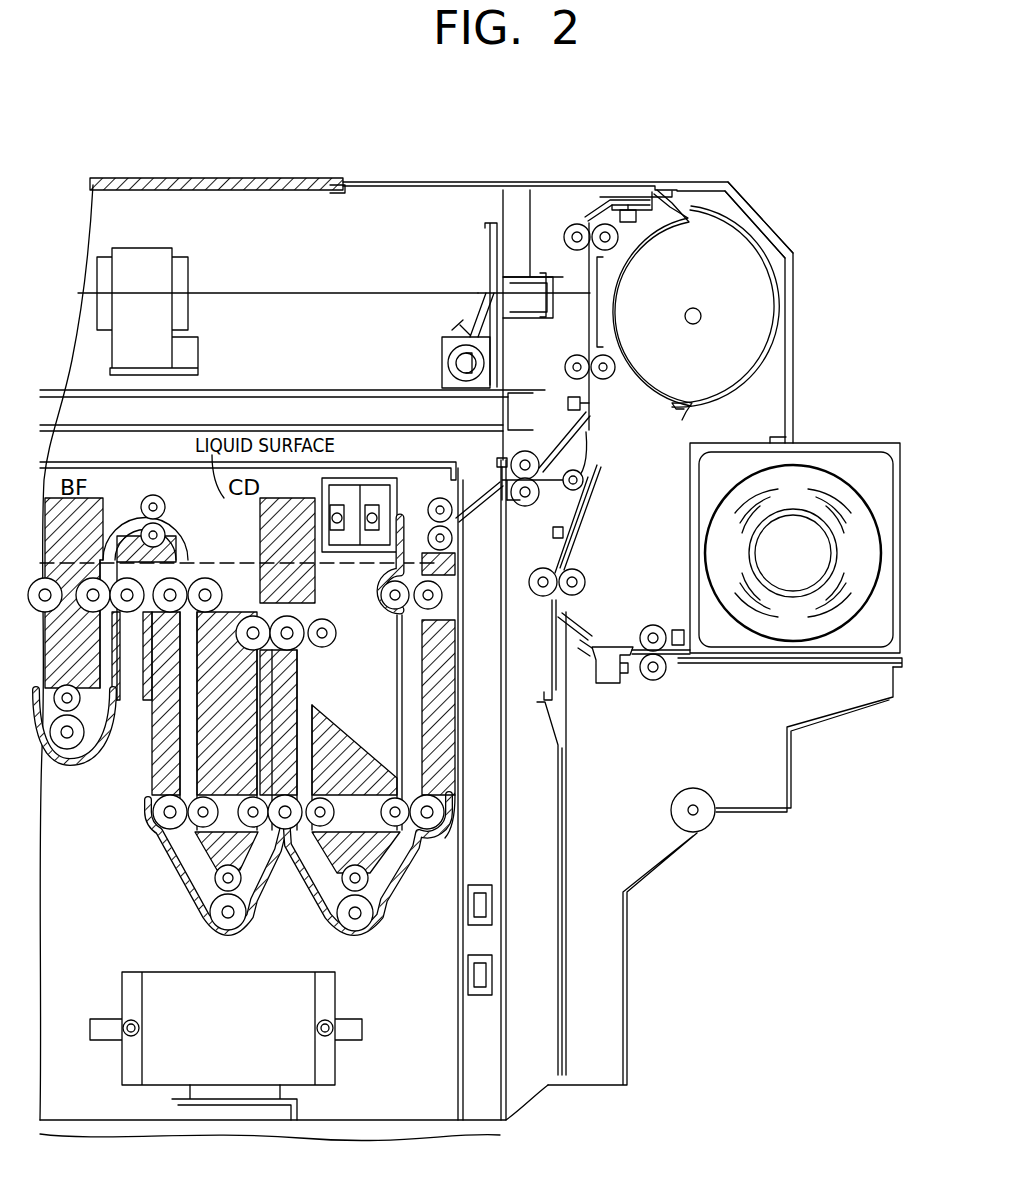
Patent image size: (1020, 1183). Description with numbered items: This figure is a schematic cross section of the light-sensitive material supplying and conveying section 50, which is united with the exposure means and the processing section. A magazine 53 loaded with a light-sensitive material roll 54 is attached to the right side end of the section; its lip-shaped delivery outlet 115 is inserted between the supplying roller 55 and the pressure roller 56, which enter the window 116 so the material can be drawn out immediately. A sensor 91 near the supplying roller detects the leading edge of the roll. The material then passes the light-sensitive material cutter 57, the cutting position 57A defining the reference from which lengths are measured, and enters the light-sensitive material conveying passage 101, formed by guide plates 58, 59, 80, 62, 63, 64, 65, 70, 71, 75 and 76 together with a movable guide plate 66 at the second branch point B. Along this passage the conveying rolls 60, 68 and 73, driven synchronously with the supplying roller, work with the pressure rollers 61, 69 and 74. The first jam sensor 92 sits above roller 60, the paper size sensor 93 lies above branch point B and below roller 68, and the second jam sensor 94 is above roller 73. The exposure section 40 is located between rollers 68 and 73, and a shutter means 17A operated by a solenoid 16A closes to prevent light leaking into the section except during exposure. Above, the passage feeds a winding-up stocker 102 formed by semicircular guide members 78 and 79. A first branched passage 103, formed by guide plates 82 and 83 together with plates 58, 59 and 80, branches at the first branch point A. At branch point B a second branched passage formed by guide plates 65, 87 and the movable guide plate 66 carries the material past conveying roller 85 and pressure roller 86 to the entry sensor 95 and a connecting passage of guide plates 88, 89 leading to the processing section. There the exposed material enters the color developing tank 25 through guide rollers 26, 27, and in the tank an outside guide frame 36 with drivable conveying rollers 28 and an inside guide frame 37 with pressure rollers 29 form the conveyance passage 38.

The solenoid 16A is at (450, 345).
The shutter means 17A is at (488, 300).
The exposure section 40 is at (530, 280).
The guide plate 70 is at (600, 290).
The guide plate 71 is at (590, 262).
The conveying roll 73 is at (575, 226).
The roller 74 is at (618, 228).
The guide plate 75 is at (610, 198).
The guide plate 76 is at (642, 197).
The second sensor for detecting jams 94 is at (640, 208).
The guide member 78 is at (636, 252).
The guide member 79 is at (748, 225).
The light-sensitive material winding up stocker 102 is at (753, 305).
The conveying roll 68 is at (565, 360).
The roller 69 is at (604, 380).
The paper size sensor 93 is at (568, 400).
The entry sensor 95 is at (502, 455).
The guide plate 65 is at (550, 412).
The conveying roller 85 is at (530, 462).
The pressure roller 86 is at (538, 492).
The guide plate 89 is at (500, 468).
The second branch point B is at (600, 430).
The guide plate 64 is at (586, 452).
The movable guide plate 66 is at (584, 482).
The guide plate 62 is at (586, 502).
The guide plate 63 is at (558, 553).
The first sensor for detecting jams 92 is at (565, 535).
The light-sensitive material conveying passage 101 is at (594, 557).
The guide plate 87 is at (509, 505).
The guide plate 88 is at (478, 522).
The guide roller 26 is at (436, 500).
The conveying roll 60 is at (540, 597).
The roller 61 is at (583, 586).
The guide plate 80 is at (552, 660).
The first branch point A is at (548, 620).
The guide plate 58 is at (580, 628).
The light-sensitive material cutter 57 is at (612, 690).
The guide plate 59 is at (578, 658).
The light-sensitive material cutting position 57A is at (647, 630).
The supplying roller 55 is at (657, 680).
The pressure roller 56 is at (670, 628).
The sensor 91 is at (682, 656).
The window 116 is at (680, 681).
The light-sensitive material delivery outlet 115 is at (694, 699).
The light-sensitive material supplying and conveying section 50 is at (763, 413).
The magazine 53 is at (905, 470).
The light-sensitive material roll 54 is at (820, 480).
The guide plate 82 is at (553, 805).
The guide plate 83 is at (568, 912).
The first branched passage 103 is at (591, 841).
The color developing tank 25 is at (290, 545).
The pressure roller 29 is at (398, 612).
The conveyance passage 38 is at (452, 678).
The outside guide frame 36 is at (442, 752).
The inside guide frame 37 is at (385, 865).
The guide roller 27 is at (445, 548).
The drivable conveying roller 28 is at (441, 600).